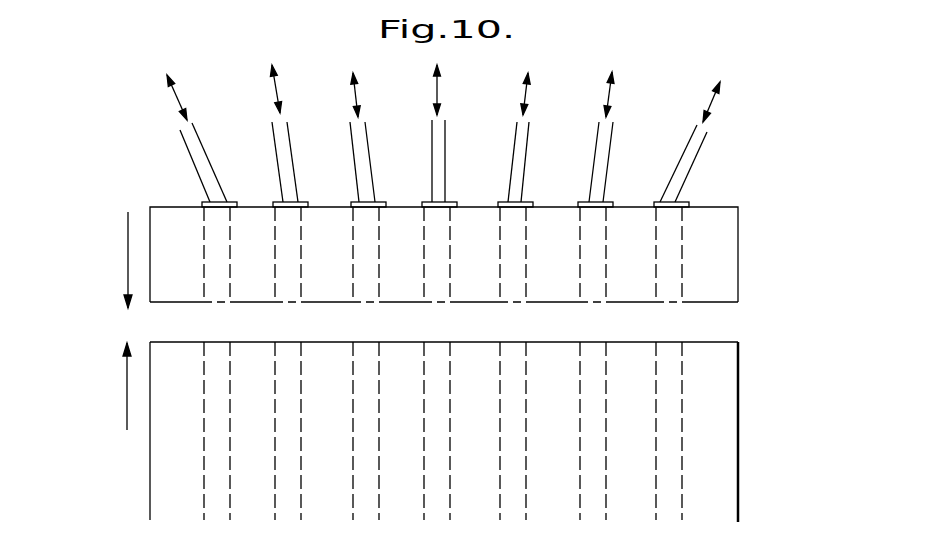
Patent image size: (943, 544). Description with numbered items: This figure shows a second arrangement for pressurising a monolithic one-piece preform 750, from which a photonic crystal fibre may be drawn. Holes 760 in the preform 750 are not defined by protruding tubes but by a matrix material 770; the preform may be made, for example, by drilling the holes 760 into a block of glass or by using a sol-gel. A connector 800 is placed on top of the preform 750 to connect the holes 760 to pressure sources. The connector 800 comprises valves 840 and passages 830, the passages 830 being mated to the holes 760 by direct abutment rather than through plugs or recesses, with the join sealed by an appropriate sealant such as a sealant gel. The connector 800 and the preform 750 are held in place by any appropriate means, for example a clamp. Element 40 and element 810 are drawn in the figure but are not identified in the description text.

The fin / thermally active element 40 is at (693, 167).
The valve 840 is at (202, 203).
The connector 800 is at (746, 238).
The passage 830 is at (683, 277).
The gap between plates 810 is at (668, 295).
The hole 760 is at (670, 417).
The preform 750 is at (738, 455).
The matrix material 770 is at (165, 455).